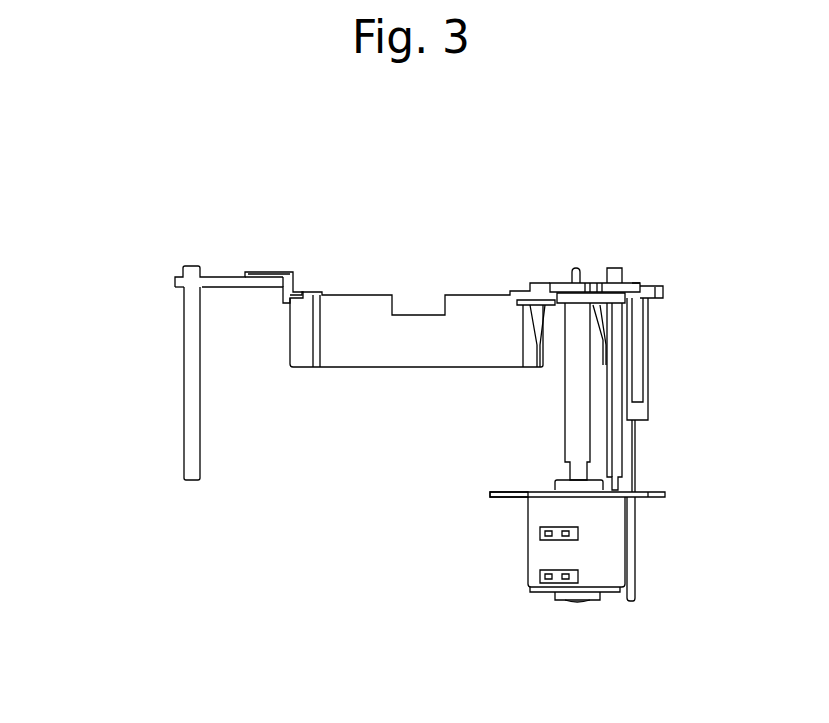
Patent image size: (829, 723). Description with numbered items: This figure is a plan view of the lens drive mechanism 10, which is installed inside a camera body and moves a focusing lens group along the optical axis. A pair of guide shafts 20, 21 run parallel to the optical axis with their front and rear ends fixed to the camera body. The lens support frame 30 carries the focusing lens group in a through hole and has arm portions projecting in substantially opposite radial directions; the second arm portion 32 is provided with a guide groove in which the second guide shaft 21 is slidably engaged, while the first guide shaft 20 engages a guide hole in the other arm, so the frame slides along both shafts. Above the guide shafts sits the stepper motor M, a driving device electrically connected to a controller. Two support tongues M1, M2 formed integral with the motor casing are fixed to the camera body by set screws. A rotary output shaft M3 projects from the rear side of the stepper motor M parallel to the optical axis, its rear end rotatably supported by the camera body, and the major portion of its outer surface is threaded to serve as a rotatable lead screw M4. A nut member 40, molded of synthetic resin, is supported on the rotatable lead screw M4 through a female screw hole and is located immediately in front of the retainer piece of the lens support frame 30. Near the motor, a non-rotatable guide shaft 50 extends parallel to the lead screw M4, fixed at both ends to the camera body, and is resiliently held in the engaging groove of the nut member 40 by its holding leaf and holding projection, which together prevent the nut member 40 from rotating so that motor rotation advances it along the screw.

The lens drive mechanism 10 is at (382, 226).
The first guide shaft 20 is at (628, 432).
The second guide shaft 21 is at (195, 429).
The lens support frame 30 is at (457, 300).
The second arm portion 32 is at (232, 278).
The nut member 40 is at (578, 297).
The guide shaft 50 is at (614, 447).
The stepper motor M is at (612, 552).
The support tongue M1 is at (650, 498).
The support tongue M2 is at (513, 498).
The rotary output shaft M3 is at (577, 471).
The rotatable lead screw M4 is at (575, 409).